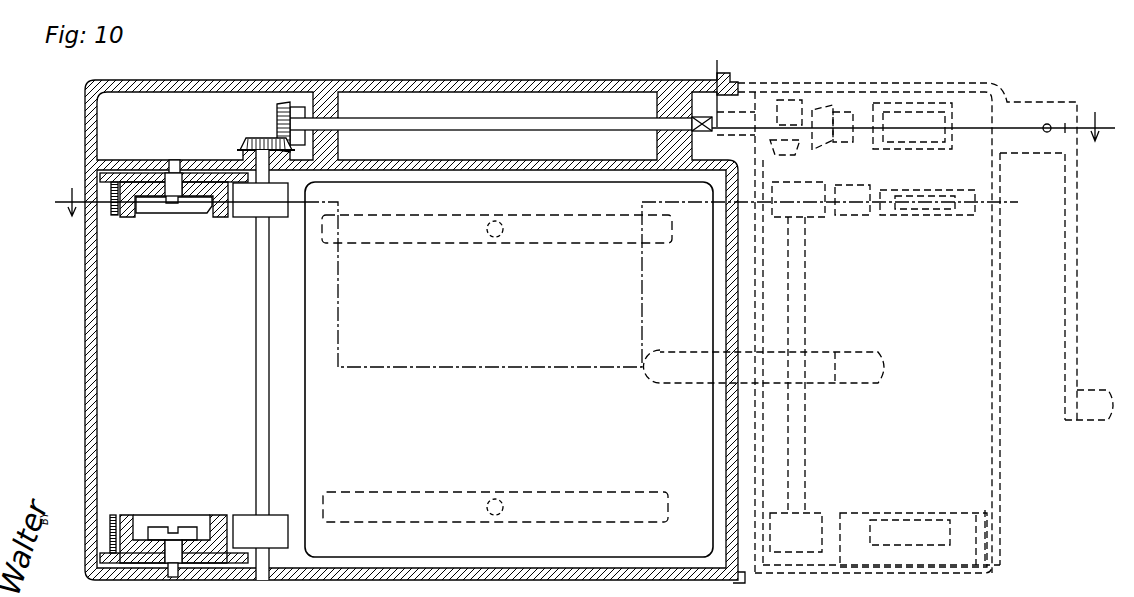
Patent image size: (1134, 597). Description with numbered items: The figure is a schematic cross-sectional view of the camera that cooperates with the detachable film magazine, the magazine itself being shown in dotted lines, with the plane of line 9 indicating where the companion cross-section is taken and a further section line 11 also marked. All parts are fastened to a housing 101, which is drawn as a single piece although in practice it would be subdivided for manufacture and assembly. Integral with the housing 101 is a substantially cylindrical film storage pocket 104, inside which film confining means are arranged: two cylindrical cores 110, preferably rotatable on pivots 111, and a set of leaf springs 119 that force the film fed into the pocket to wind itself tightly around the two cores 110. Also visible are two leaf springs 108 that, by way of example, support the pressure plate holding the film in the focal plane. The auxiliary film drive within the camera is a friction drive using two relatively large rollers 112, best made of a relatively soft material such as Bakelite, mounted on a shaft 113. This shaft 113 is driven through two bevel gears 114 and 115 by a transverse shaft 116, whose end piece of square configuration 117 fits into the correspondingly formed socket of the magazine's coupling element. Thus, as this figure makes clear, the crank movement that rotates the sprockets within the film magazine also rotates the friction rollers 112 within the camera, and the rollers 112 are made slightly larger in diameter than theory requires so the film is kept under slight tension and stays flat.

The housing 101 is at (85, 97).
The film storage pocket 104 is at (421, 369).
The leaf springs 108 is at (400, 245).
The cylindrical cores 110 is at (128, 216).
The pivots 111 is at (186, 210).
The rollers 112 is at (246, 212).
The shaft 113 is at (256, 317).
The bevel gear 114 is at (244, 141).
The bevel gear 115 is at (282, 104).
The transverse shaft 116 is at (484, 118).
The end piece of square configuration 117 is at (700, 117).
The leaf springs 119 is at (115, 214).
The line 9— 9 is at (536, 277).
The section line 11- 11 is at (913, 112).